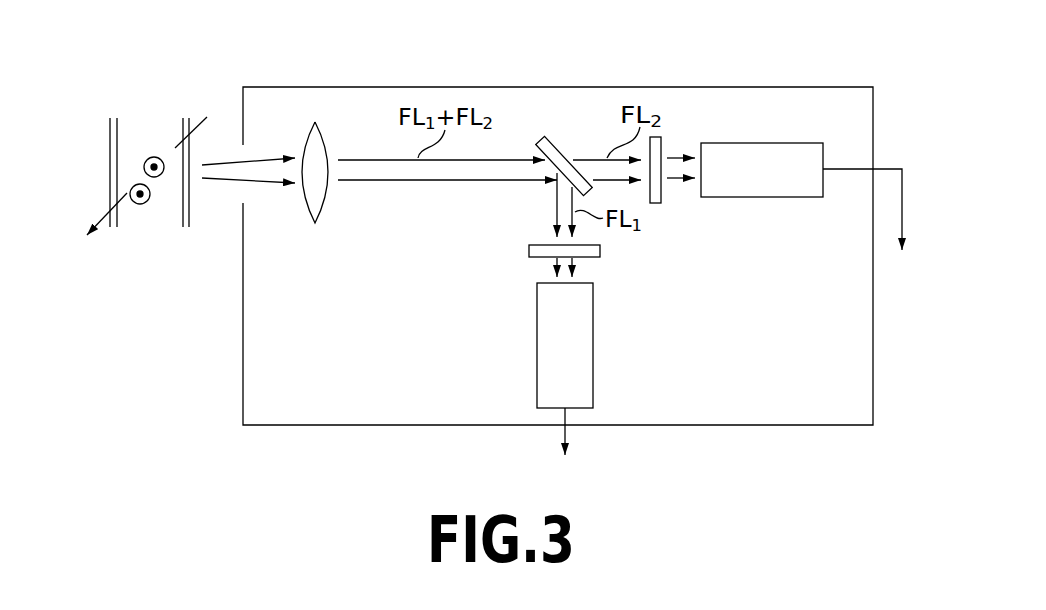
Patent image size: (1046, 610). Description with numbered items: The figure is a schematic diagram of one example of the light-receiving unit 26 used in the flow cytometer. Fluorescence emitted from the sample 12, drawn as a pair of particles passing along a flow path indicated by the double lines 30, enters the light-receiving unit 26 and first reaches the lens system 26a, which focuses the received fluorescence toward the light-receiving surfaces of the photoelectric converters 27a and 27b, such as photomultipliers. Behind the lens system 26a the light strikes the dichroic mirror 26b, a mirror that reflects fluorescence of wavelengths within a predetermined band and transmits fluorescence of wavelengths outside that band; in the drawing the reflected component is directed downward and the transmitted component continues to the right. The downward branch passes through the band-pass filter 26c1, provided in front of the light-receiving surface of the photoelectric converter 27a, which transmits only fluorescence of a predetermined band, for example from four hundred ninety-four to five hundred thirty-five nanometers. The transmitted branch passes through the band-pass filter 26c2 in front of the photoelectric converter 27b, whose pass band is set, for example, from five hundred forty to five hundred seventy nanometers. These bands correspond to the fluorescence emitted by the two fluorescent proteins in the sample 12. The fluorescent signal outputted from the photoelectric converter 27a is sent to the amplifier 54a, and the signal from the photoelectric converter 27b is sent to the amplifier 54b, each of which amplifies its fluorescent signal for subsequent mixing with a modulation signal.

The light-receiving unit 26 is at (507, 87).
The web / transport path 30 is at (110, 140).
The sample 12 is at (155, 140).
The lens system 26a is at (315, 225).
The dichroic mirror 26b is at (578, 128).
The band-pass filter 26c1 is at (600, 252).
The band-pass filter 26c2 is at (653, 203).
The photoelectric converter 27a is at (593, 332).
The photoelectric converter 27b is at (765, 197).
The amplifier 54a is at (564, 450).
The amplifier 54b is at (873, 228).